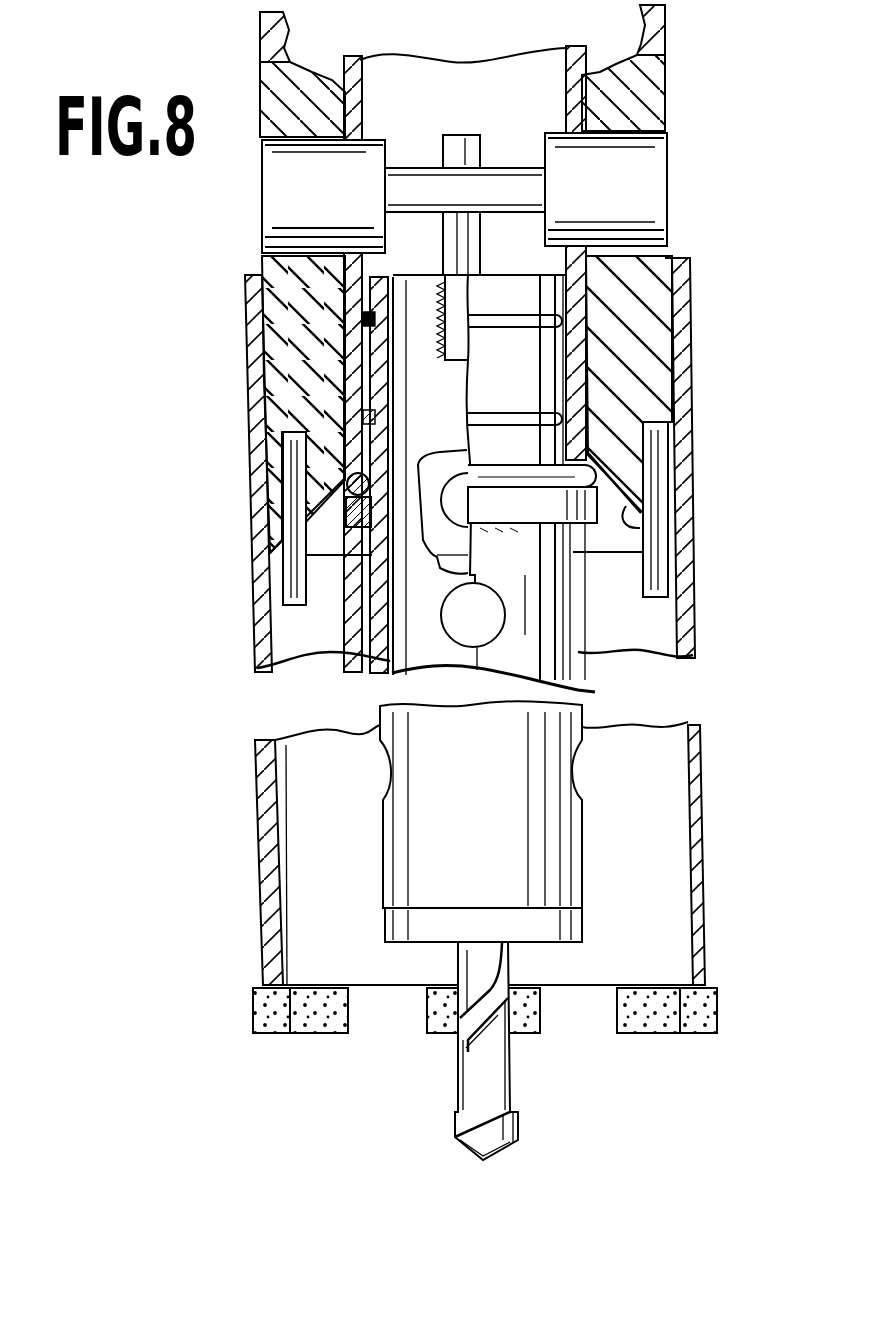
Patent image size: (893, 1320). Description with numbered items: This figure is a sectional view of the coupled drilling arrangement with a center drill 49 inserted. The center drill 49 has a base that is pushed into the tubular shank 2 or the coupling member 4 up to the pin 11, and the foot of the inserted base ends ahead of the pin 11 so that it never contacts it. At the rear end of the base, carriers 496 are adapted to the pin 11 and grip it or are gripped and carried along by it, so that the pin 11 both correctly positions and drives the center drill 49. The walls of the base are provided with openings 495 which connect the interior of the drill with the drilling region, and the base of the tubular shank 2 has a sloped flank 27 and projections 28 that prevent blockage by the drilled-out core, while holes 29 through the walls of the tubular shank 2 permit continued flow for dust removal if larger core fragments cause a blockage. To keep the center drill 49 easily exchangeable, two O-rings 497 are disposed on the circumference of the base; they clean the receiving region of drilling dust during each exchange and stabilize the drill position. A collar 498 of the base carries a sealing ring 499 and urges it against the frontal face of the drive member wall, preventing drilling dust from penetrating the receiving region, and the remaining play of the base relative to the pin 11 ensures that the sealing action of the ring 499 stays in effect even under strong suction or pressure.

The tubular shank 2 is at (260, 633).
The coupling member 4 is at (645, 325).
The pin 11 is at (426, 185).
The sloped flank 27 is at (632, 506).
The projections 28 is at (657, 577).
The holes 29 is at (447, 453).
The center drill 49 is at (425, 922).
The openings 495 is at (465, 625).
The carriers 496 is at (462, 148).
The O-rings 497 is at (362, 416).
The collar 498 is at (537, 508).
The sealing ring 499 is at (585, 473).